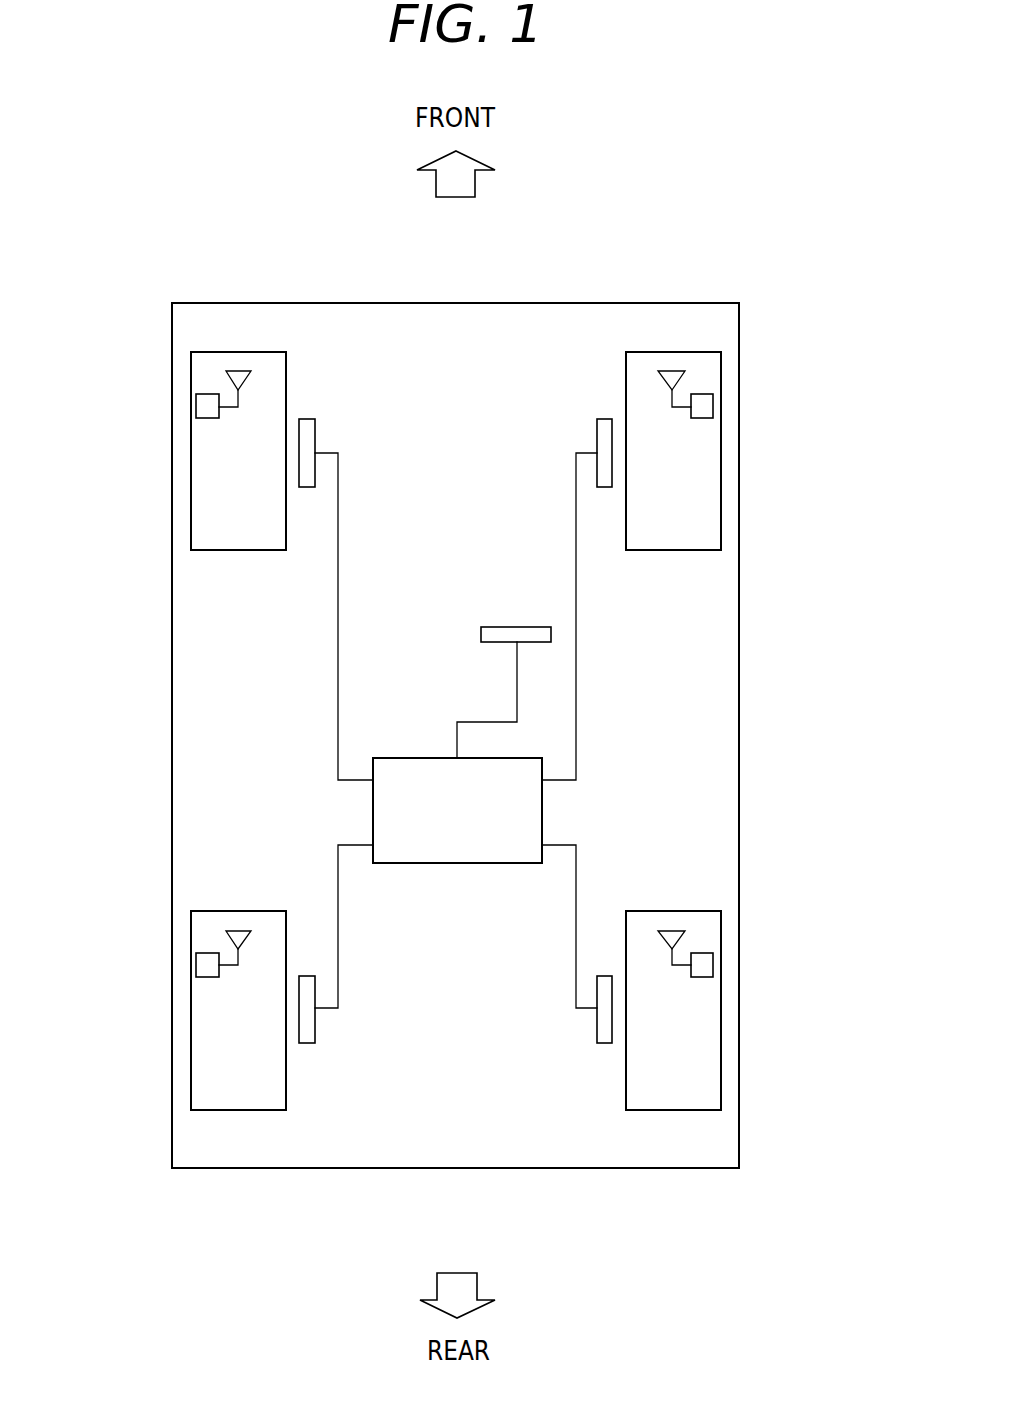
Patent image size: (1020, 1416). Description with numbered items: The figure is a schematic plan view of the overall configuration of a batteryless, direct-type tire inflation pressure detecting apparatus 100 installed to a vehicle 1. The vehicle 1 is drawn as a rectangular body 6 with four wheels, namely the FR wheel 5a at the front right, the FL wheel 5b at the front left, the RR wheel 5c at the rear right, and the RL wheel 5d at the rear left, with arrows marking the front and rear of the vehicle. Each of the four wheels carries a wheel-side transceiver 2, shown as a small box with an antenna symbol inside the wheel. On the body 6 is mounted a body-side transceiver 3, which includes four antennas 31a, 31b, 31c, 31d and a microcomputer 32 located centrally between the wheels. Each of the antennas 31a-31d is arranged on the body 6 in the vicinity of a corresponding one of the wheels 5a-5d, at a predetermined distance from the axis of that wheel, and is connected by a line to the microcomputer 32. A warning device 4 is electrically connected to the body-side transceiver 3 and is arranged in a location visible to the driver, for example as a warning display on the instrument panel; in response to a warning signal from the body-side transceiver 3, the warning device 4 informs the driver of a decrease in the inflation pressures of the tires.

The tire inflation pressure detecting apparatus 100 is at (161, 210).
The vehicle 1 is at (494, 735).
The wheel-side transceiver 2 is at (196, 404).
The body-side transceiver 3 is at (455, 731).
The antenna 31a is at (597, 434).
The antenna 31b is at (315, 434).
The antenna 31c is at (597, 1028).
The antenna 31d is at (315, 1028).
The microcomputer 32 is at (514, 866).
The warning device 4 is at (537, 643).
The FR wheel 5a is at (721, 497).
The FL wheel 5b is at (191, 490).
The RR wheel 5c is at (721, 1062).
The RL wheel 5d is at (191, 1050).
The body 6 is at (739, 593).